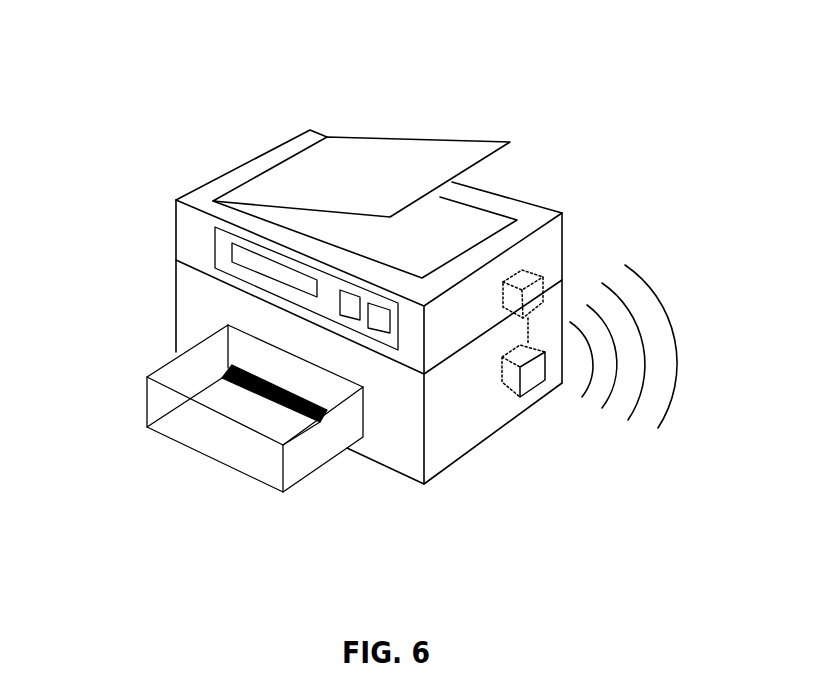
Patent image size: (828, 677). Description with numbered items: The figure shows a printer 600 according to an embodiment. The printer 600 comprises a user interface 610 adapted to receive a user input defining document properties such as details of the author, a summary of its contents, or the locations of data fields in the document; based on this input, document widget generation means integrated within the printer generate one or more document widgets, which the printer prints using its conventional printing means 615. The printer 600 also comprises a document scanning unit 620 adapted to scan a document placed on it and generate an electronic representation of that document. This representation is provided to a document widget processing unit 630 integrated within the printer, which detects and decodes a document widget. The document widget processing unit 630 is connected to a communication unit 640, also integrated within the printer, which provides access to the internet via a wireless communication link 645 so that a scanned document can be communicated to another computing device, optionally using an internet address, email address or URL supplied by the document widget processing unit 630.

The printer 600 is at (216, 99).
The user interface 610 is at (258, 258).
The printing means 615 is at (267, 357).
The document scanning unit 620 is at (452, 226).
The document widget processing unit 630 is at (527, 276).
The communication unit 640 is at (535, 364).
The wireless communication link 645 is at (638, 346).